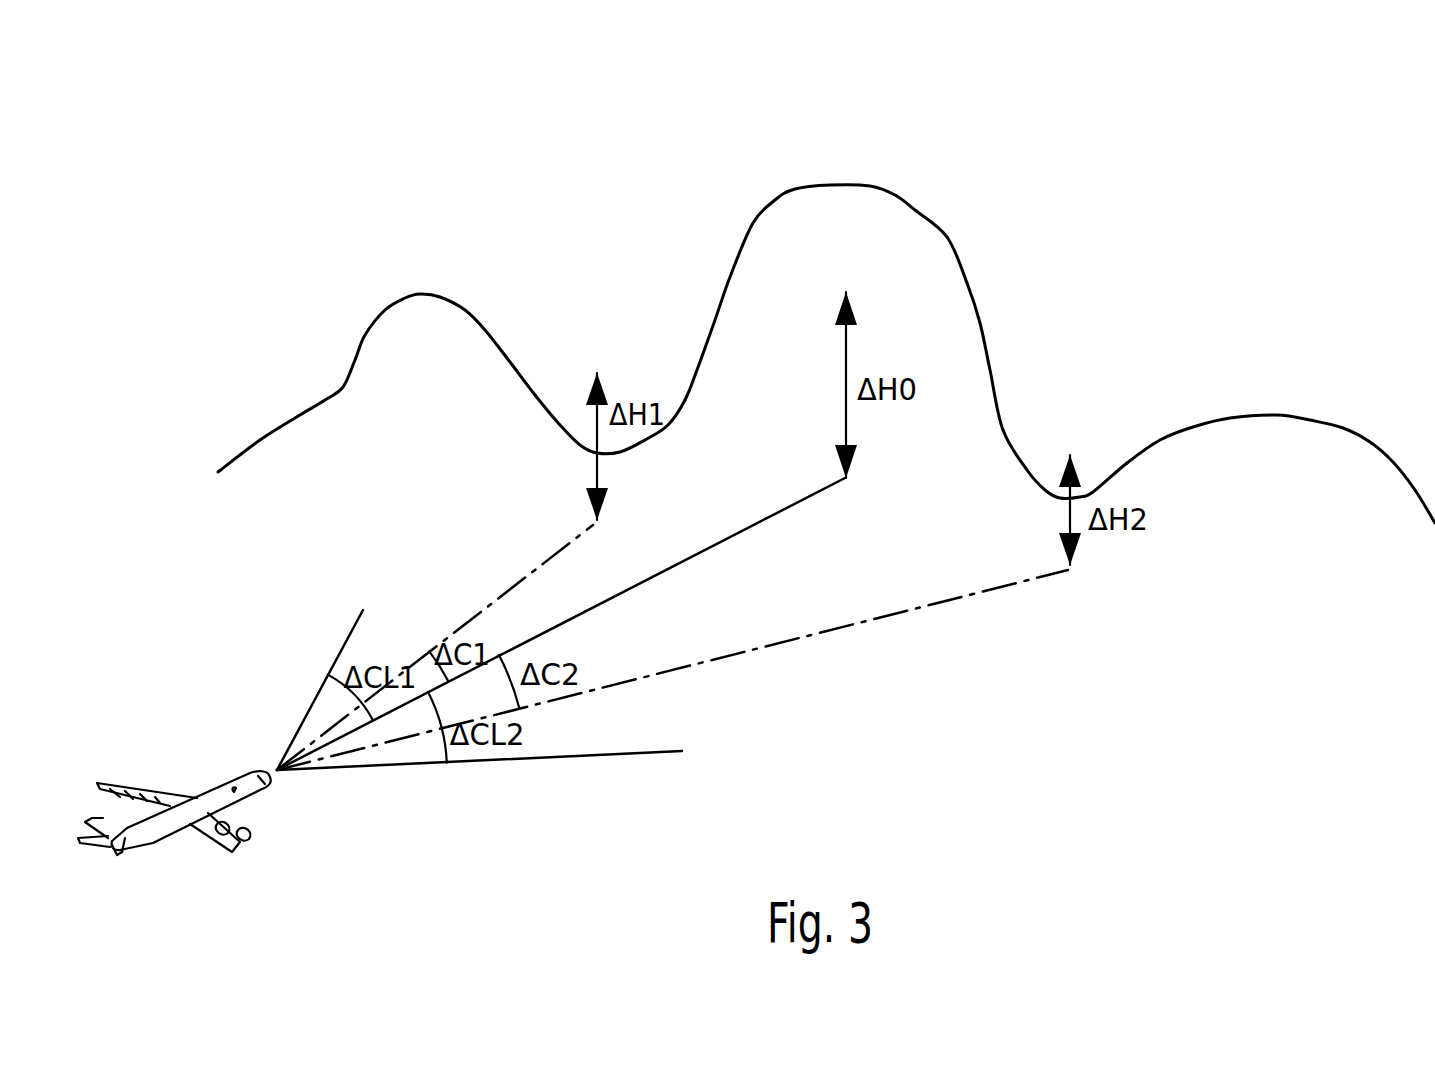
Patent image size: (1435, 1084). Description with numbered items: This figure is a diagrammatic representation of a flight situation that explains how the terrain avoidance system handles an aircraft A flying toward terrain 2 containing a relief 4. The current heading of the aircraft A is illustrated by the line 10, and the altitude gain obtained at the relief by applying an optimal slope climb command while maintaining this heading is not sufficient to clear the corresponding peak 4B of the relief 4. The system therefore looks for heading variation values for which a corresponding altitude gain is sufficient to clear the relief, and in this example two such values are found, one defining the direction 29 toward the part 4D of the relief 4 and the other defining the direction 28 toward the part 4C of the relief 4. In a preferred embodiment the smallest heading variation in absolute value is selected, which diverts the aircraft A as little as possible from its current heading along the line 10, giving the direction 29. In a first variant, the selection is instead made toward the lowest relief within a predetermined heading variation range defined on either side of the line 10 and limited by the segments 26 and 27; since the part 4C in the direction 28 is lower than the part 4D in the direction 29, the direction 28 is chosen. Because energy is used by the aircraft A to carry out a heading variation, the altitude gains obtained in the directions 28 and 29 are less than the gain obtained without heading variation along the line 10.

The terrain 2 is at (822, 281).
The relief 4 is at (1005, 308).
The peak 4B is at (898, 158).
The part of the relief 4C is at (1103, 475).
The part of the relief 4D is at (565, 400).
The line 10 is at (756, 520).
The segment 26 is at (313, 693).
The segment 27 is at (385, 766).
The direction 28 is at (808, 637).
The direction 29 is at (520, 580).
The aircraft A is at (163, 837).